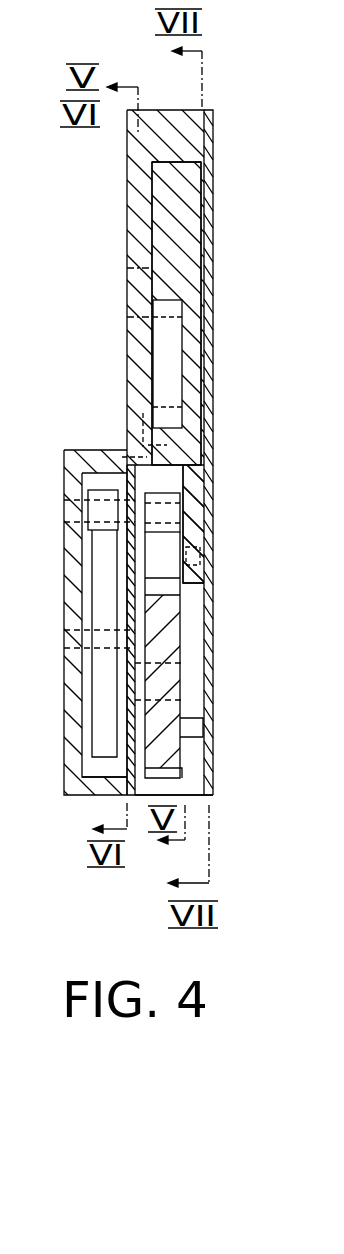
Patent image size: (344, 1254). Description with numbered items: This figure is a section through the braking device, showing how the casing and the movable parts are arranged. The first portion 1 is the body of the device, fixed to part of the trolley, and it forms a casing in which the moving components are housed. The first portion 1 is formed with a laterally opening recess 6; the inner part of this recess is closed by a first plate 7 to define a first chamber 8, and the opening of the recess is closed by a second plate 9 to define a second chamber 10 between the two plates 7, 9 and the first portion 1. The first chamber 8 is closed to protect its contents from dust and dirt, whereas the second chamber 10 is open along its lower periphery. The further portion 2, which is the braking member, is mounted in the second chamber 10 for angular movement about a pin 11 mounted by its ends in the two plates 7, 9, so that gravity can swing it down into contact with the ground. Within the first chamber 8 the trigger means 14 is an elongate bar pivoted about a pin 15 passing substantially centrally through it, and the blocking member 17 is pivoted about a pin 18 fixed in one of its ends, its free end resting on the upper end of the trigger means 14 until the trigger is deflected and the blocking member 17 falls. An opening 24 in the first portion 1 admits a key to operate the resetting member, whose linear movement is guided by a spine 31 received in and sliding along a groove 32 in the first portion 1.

The first portion 1 is at (140, 170).
The further portion 2 is at (172, 633).
The laterally opening recess 6 is at (195, 592).
The first plate 7 is at (132, 558).
The first chamber 8 is at (92, 768).
The second plate 9 is at (211, 757).
The second chamber 10 is at (197, 783).
The pin 11 is at (193, 670).
The trigger means 14 is at (103, 592).
The pin 15 is at (207, 220).
The blocking member 17 is at (102, 510).
The pin 18 is at (126, 500).
The opening 24 is at (137, 308).
The spine 31 is at (160, 242).
The groove 32 is at (165, 363).